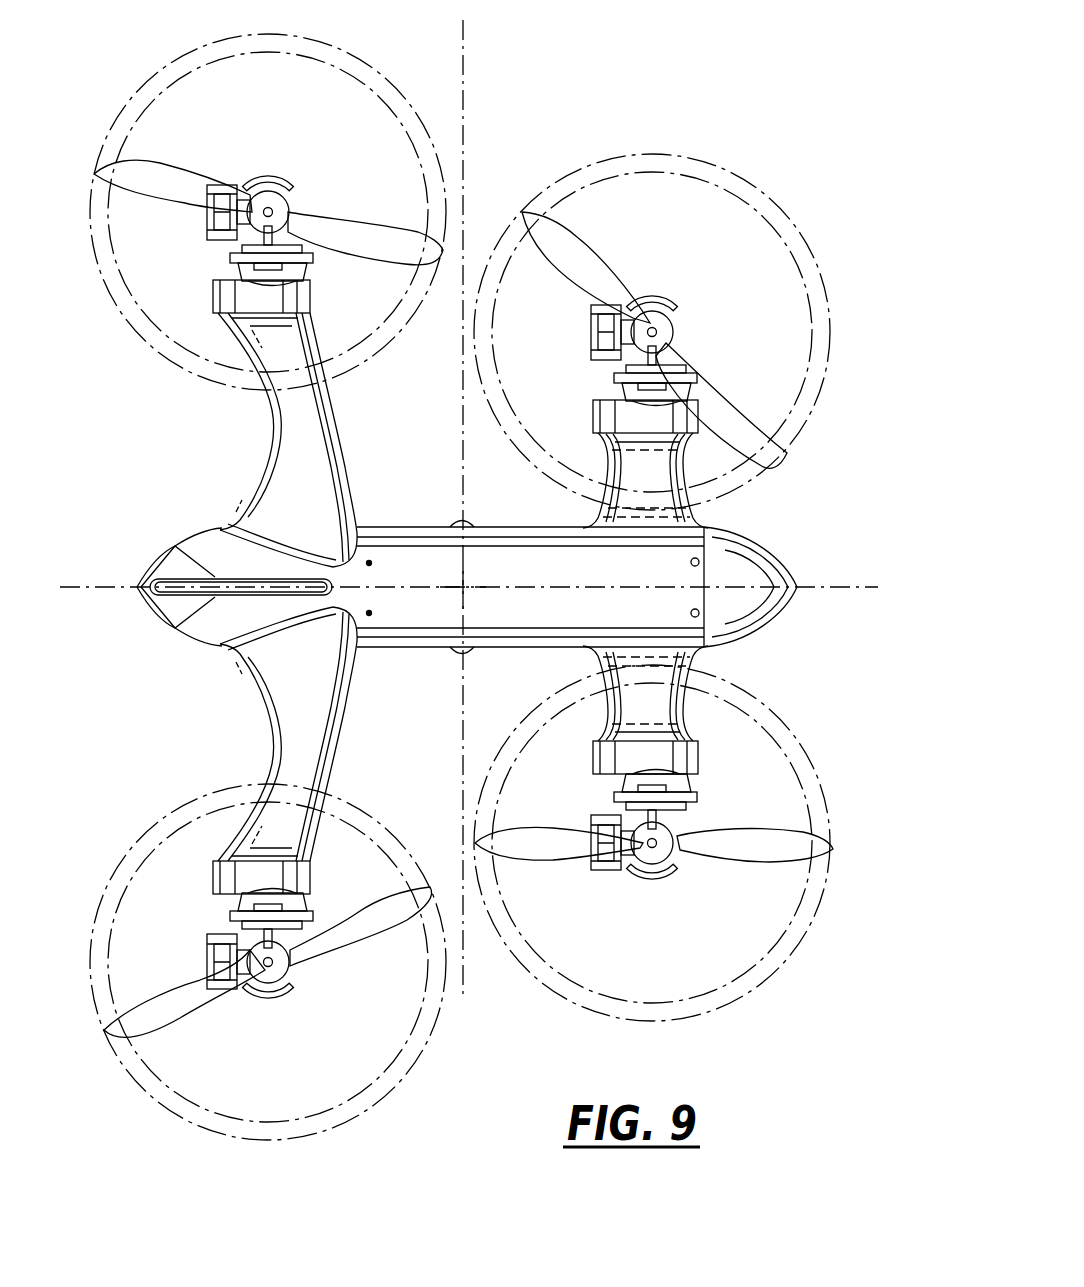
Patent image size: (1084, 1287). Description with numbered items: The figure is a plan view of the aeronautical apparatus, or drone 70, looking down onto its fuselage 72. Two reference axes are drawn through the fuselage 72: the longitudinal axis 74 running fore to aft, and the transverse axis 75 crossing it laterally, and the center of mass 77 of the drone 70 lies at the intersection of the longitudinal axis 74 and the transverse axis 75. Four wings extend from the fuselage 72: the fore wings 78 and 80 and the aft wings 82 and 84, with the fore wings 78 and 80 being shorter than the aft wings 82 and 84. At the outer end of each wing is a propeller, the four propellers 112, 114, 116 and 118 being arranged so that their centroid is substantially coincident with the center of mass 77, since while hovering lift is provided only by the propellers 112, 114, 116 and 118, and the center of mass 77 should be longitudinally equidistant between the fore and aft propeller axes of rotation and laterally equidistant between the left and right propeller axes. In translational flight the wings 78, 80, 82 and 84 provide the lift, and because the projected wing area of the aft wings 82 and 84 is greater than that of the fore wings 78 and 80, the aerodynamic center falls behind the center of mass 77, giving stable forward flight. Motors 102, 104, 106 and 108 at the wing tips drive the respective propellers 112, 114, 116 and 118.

The aeronautical apparatus 70 is at (908, 508).
The fuselage 72 is at (415, 567).
The longitudinal axis 74 is at (855, 585).
The transverse axis 75 is at (463, 93).
The center of mass 77 is at (462, 587).
The right fore wing 78 is at (673, 730).
The left fore wing 80 is at (672, 472).
The right aft wing 82 is at (283, 700).
The left aft wing 84 is at (286, 402).
The motor 102 is at (245, 948).
The motor 104 is at (654, 860).
The motor 106 is at (258, 208).
The motor 108 is at (663, 325).
The propeller 112 is at (123, 1038).
The propeller 114 is at (797, 845).
The propeller 116 is at (150, 178).
The propeller 118 is at (537, 215).